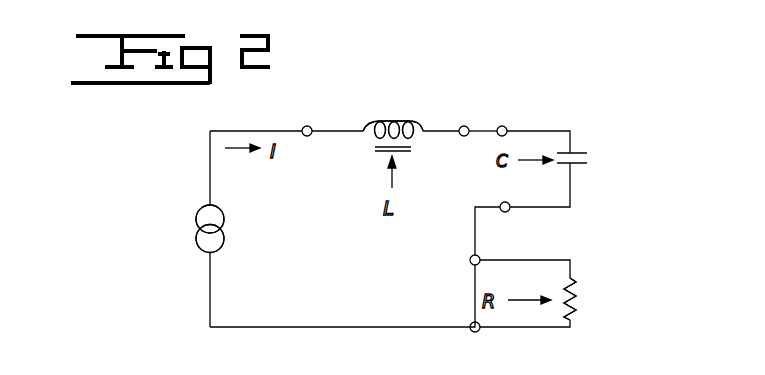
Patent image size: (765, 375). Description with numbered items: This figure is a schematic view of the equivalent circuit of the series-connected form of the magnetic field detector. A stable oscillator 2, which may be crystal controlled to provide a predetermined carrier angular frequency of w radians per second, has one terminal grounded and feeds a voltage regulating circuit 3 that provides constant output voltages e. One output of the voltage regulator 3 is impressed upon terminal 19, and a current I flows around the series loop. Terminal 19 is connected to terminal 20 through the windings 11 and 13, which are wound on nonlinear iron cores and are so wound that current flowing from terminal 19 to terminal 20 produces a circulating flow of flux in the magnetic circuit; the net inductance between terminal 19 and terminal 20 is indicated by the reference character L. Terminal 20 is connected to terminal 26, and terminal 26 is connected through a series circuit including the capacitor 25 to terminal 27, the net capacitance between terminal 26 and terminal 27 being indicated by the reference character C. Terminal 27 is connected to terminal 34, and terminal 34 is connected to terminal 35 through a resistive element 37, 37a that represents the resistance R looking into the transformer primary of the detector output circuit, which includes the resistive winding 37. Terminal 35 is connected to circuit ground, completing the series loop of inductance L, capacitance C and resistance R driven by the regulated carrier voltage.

The stable oscillator 2 is at (214, 252).
The voltage regulating circuit 3 is at (210, 229).
The winding 11 is at (402, 100).
The winding 13 is at (393, 130).
The terminal 19 is at (307, 136).
The terminal 20 is at (466, 126).
The capacitor 25 is at (583, 153).
The terminal 26 is at (505, 126).
The terminal 27 is at (505, 212).
The terminal 34 is at (471, 264).
The terminal 35 is at (471, 331).
The resistive winding 37 is at (578, 312).
The resistor 37a is at (570, 299).